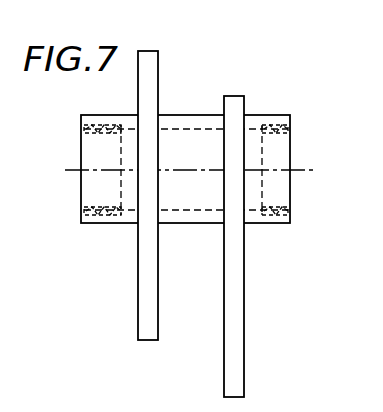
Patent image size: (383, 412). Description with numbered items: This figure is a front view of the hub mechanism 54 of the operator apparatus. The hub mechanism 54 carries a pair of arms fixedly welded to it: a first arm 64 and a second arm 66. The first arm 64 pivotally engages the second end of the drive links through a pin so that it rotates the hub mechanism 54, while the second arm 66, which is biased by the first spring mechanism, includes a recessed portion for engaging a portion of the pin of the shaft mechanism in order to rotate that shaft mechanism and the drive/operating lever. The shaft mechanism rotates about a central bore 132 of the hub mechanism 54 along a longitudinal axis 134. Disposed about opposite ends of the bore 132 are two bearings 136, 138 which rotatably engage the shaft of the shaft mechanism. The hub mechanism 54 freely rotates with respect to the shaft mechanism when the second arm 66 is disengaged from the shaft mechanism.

The hub mechanism 54 is at (66, 147).
The first arm 64 is at (138, 307).
The second arm 66 is at (245, 364).
The central bore 132 is at (178, 129).
The longitudinal axis 134 is at (305, 170).
The bearing 136 is at (280, 118).
The bearing 138 is at (99, 224).